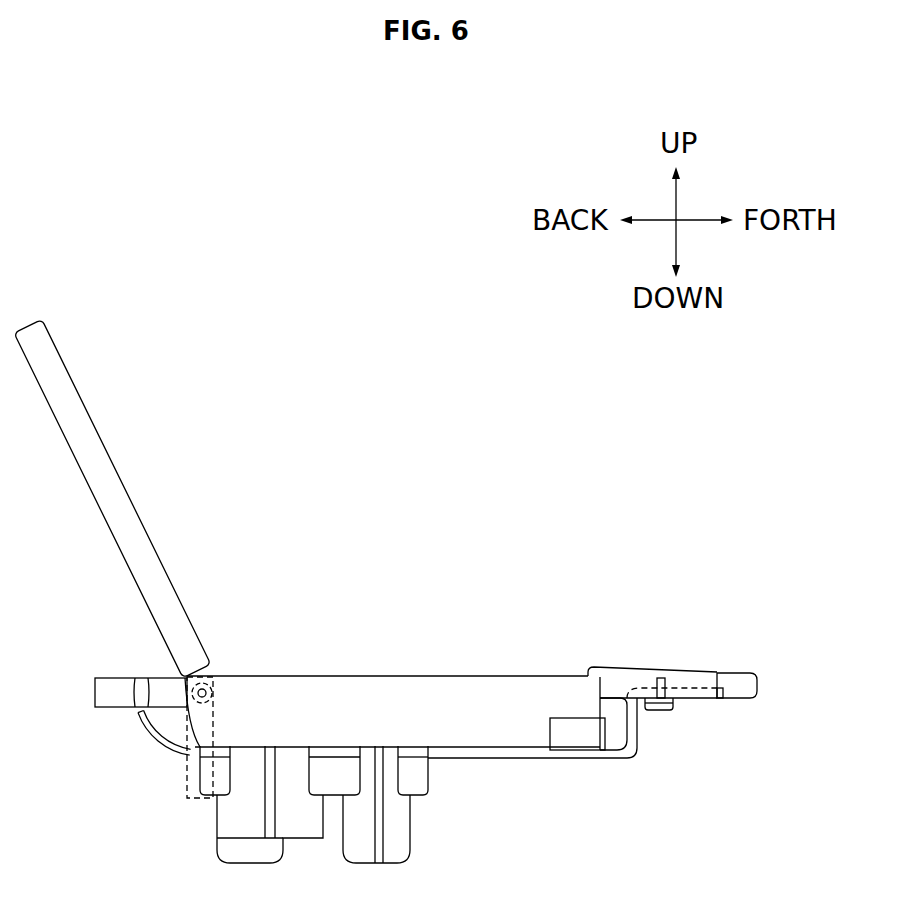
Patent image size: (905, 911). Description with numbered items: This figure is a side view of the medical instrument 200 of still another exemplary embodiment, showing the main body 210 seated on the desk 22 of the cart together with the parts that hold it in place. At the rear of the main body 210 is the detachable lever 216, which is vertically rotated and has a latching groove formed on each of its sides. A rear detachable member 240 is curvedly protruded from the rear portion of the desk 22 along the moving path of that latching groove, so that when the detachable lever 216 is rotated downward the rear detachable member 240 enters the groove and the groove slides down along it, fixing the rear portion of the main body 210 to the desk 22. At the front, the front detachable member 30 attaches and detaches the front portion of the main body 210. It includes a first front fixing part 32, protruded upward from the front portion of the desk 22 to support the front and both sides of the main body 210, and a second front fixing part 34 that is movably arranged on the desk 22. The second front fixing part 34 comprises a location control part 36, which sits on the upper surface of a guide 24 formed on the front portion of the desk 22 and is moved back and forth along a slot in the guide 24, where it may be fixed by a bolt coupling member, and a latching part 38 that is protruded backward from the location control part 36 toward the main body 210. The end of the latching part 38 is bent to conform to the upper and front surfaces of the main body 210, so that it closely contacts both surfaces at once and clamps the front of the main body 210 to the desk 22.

The medical instrument 200 is at (502, 498).
The main body 210 is at (395, 672).
The detachable lever 216 is at (115, 678).
The rear detachable member 240 is at (150, 740).
The desk 22 is at (502, 756).
The guide 24 is at (627, 718).
The front detachable member 30 is at (626, 788).
The first front fixing part 32 is at (577, 742).
The second front fixing part 34 is at (685, 717).
The location control part 36 is at (742, 674).
The latching part 38 is at (600, 666).